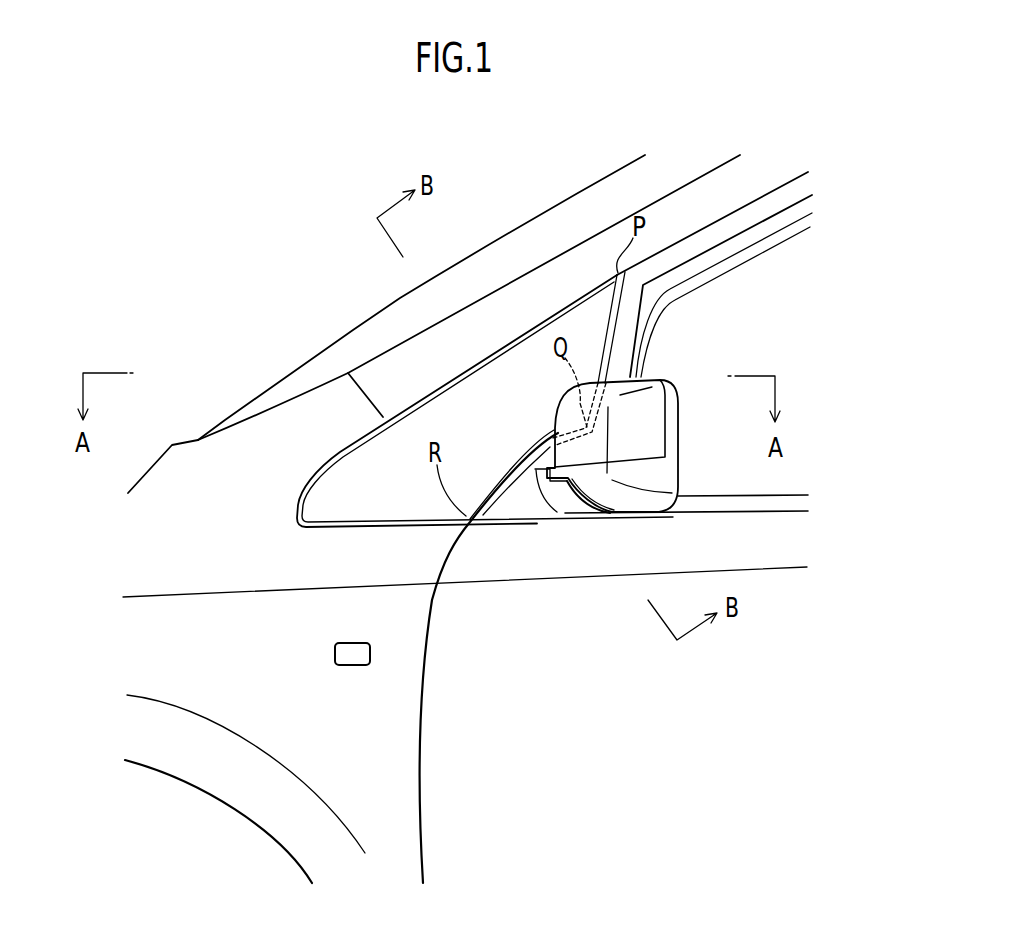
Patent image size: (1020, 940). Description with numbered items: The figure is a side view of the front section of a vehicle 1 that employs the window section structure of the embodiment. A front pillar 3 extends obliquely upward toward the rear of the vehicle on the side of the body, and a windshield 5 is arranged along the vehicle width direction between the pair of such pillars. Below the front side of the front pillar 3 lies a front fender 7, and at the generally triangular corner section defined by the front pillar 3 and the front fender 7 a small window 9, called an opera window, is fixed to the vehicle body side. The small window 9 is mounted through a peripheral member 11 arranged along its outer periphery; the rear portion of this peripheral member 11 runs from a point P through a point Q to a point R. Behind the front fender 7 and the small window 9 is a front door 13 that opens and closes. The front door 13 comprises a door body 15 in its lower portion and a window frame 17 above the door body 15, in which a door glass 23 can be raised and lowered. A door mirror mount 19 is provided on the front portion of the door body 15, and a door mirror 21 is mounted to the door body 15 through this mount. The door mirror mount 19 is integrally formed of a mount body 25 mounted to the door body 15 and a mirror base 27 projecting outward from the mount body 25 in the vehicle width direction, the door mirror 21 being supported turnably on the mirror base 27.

The vehicle 1 is at (220, 301).
The front pillar 3 is at (435, 342).
The windshield 5 is at (531, 237).
The front fender 7 is at (230, 687).
The small window 9 is at (362, 485).
The peripheral member 11 is at (342, 527).
The front door 13 is at (625, 756).
The door body 15 is at (476, 779).
The window frame 17 is at (732, 215).
The door mirror mount 19 is at (514, 482).
The door mirror 21 is at (637, 410).
The door glass 23 is at (753, 273).
The mount body 25 is at (521, 508).
The mirror base 27 is at (572, 503).